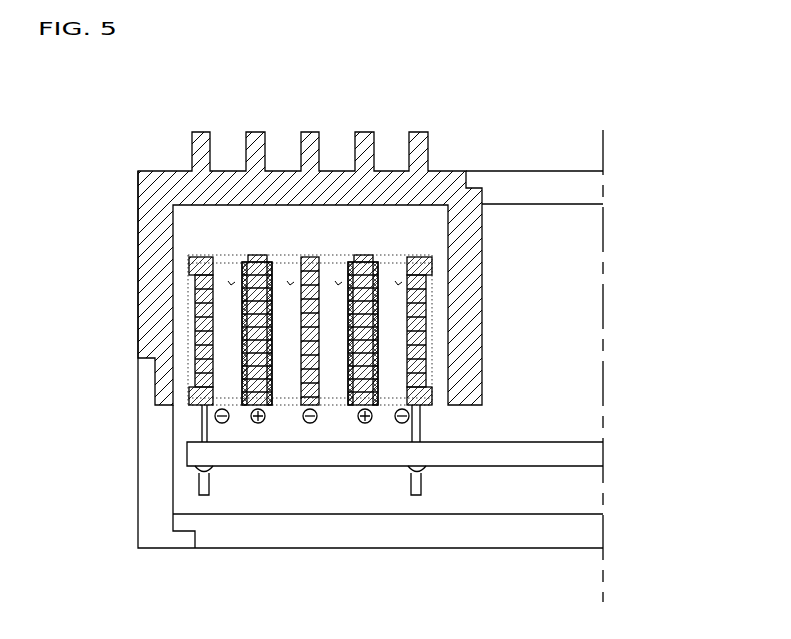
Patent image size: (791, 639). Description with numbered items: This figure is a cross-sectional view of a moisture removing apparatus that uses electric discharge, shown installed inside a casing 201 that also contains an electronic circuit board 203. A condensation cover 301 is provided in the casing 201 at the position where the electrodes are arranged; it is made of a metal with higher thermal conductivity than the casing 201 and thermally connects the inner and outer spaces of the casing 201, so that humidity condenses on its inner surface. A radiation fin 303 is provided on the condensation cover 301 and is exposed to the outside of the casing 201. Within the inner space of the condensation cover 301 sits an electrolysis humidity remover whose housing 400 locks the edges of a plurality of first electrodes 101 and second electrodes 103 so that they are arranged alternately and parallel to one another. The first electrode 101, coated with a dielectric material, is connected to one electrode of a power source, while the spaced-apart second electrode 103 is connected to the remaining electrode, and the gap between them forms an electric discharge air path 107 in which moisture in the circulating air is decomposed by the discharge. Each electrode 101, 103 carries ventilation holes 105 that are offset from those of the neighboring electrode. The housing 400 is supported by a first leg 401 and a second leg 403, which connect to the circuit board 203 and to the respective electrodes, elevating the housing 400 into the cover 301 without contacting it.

The first electrode 101 is at (243, 398).
The second electrode 103 is at (195, 367).
The ventilation holes 105 is at (243, 337).
The electric discharge air path 107 is at (231, 285).
The casing 201 is at (587, 188).
The electronic circuit board 203 is at (288, 458).
The condensation cover 301 is at (443, 183).
The radiation fin 303 is at (423, 138).
The housing 400 is at (170, 263).
The first leg 401 is at (203, 492).
The second leg 403 is at (415, 496).